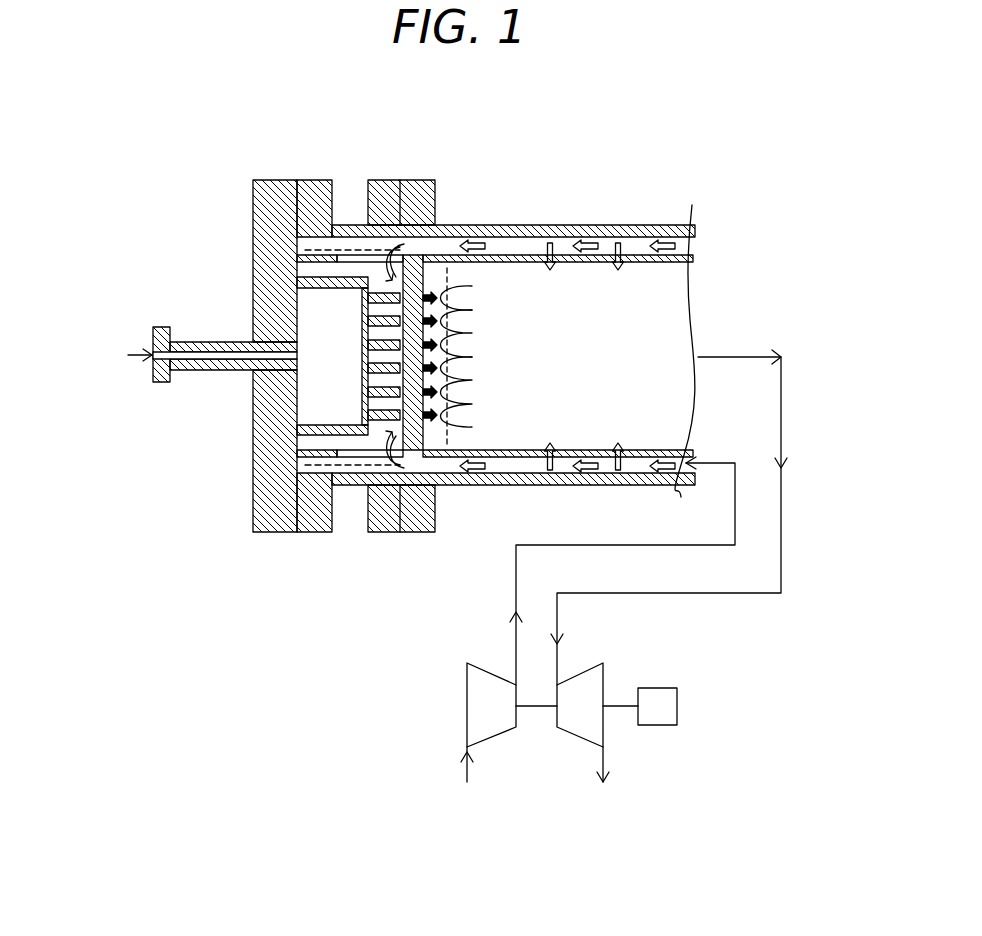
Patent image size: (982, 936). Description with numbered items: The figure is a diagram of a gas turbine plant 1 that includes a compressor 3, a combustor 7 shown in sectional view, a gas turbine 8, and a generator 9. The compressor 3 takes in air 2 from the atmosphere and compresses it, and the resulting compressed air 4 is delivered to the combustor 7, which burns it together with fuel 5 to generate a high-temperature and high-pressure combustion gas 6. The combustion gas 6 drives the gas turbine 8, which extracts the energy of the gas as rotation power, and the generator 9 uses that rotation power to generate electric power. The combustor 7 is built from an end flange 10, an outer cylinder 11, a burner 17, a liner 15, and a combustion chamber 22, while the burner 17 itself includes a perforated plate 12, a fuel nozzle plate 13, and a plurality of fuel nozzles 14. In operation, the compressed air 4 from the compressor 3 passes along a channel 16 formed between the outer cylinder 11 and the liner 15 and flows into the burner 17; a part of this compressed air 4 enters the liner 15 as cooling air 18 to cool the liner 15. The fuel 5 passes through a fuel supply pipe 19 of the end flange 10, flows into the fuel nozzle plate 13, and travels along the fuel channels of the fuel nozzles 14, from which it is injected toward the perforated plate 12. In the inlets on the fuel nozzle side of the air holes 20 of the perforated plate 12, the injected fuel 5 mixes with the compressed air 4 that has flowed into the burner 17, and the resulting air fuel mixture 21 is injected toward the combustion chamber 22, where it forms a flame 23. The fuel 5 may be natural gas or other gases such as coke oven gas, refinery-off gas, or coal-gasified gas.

The gas turbine plant 1 is at (775, 172).
The air 2 is at (459, 773).
The compressor 3 is at (470, 696).
The compressed air 4 is at (587, 545).
The fuel 5 is at (125, 347).
The combustion gas 6 is at (726, 357).
The combustor 7 is at (518, 178).
The gas turbine 8 is at (601, 678).
The generator 9 is at (671, 703).
The end flange 10 is at (278, 180).
The outer cylinder 11 is at (415, 180).
The perforated plate 12 is at (425, 280).
The fuel nozzle plate 13 is at (365, 288).
The fuel nozzles 14 is at (366, 327).
The liner 15 is at (642, 450).
The channel 16 is at (608, 247).
The burner 17 is at (433, 458).
The cooling air 18 is at (618, 264).
The fuel supply pipe 19 is at (205, 352).
The air holes 20 is at (448, 323).
The air fuel mixture 21 is at (450, 345).
The combustion chamber 22 is at (565, 360).
The flame 23 is at (464, 372).